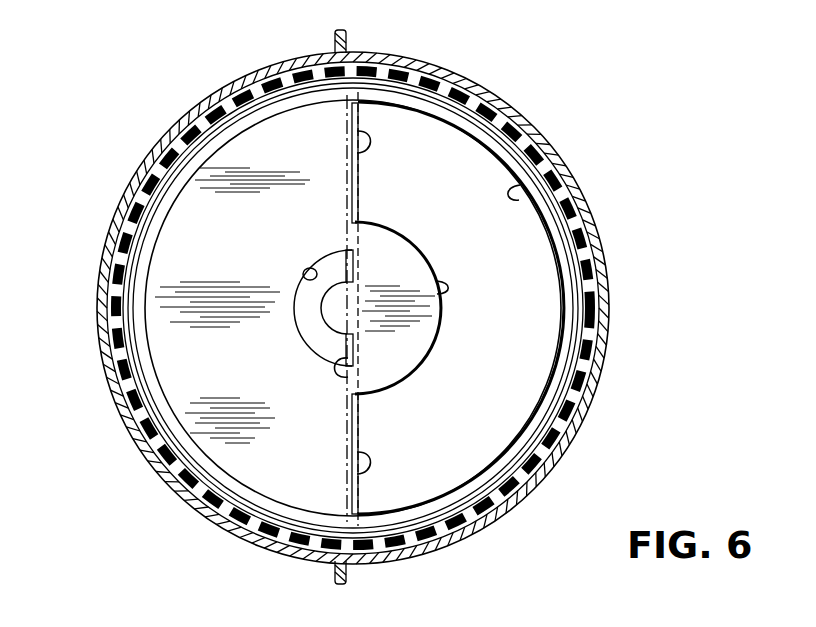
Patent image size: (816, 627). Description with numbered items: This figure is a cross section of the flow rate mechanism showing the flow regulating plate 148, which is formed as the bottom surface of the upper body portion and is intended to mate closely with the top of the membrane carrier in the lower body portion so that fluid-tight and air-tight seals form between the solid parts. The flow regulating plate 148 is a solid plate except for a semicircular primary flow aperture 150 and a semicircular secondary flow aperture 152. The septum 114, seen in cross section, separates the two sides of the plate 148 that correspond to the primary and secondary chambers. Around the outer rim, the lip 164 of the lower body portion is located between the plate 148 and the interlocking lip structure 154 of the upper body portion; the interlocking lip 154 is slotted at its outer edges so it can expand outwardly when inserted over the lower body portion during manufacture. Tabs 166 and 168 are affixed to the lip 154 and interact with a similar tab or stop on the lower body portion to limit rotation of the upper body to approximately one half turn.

The septum 114 is at (360, 186).
The flow regulating plate 148 is at (565, 243).
The primary flow aperture 150 is at (362, 136).
The secondary flow aperture 152 is at (315, 270).
The interlocking lip structure 154 is at (210, 98).
The lip 164 is at (598, 272).
The tab 166 is at (338, 46).
The tab 168 is at (348, 580).